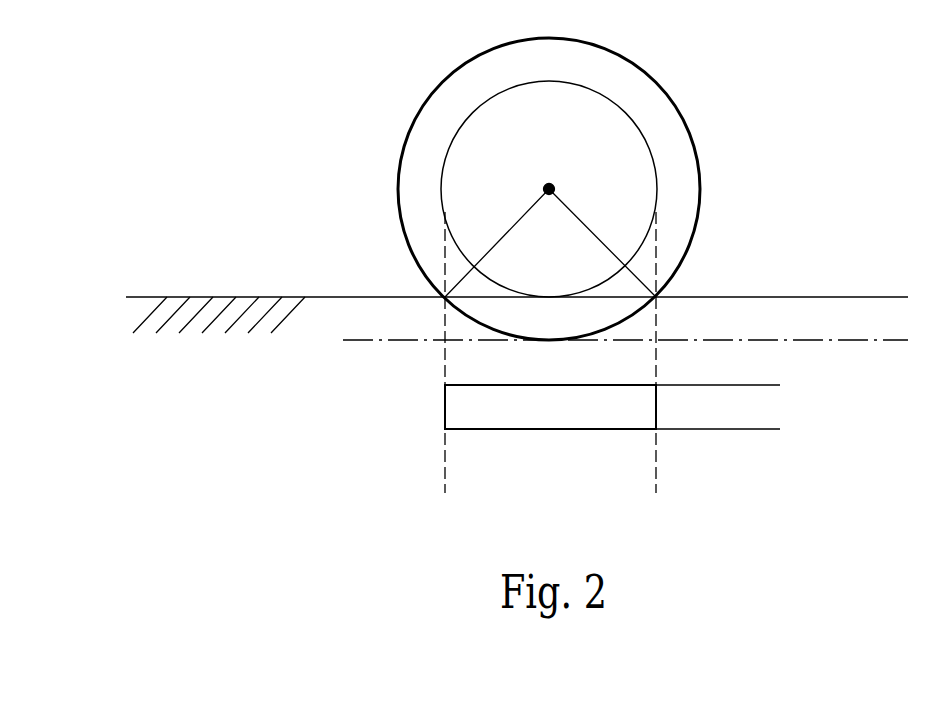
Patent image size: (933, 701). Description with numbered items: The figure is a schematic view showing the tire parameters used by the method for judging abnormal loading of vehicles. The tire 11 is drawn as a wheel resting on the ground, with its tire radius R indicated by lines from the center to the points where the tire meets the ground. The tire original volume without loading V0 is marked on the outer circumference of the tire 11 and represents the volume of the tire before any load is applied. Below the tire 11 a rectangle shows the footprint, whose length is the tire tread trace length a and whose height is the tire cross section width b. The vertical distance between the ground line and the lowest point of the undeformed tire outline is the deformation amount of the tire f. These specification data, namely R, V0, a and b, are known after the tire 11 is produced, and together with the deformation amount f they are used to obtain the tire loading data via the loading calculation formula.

The tire 11 is at (668, 97).
The tire radius R is at (603, 242).
The tire original volume without loading V0 is at (417, 129).
The tire tread trace length a is at (656, 473).
The tire cross section width b is at (774, 385).
The deformation amount of the tire f is at (848, 340).